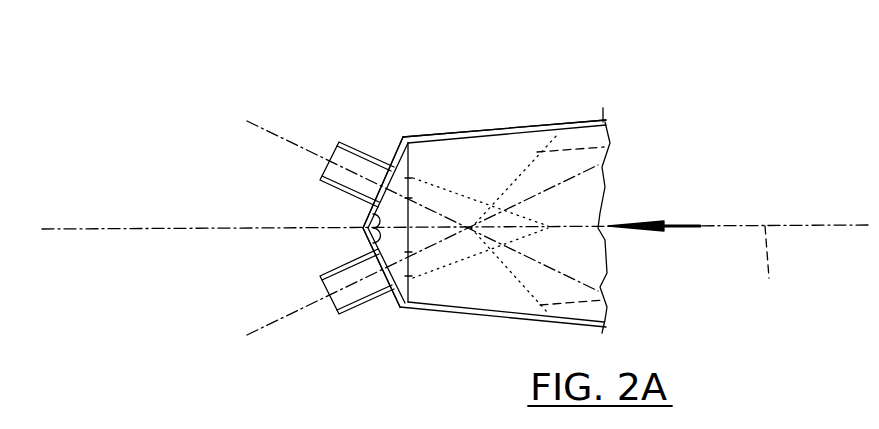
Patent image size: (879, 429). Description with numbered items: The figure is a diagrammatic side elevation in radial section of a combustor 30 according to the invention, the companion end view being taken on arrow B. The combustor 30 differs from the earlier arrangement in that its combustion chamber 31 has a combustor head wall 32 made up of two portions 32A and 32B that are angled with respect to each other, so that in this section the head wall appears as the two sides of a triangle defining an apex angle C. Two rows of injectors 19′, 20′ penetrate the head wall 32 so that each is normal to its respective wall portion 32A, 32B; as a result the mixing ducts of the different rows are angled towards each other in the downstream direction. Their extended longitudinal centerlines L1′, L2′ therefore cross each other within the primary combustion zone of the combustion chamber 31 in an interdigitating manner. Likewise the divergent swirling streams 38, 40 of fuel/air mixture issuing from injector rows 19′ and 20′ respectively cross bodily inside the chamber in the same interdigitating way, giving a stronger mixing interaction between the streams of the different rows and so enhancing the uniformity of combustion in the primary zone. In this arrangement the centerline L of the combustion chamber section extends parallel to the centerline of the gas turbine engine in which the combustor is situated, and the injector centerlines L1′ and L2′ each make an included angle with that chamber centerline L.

The combustor 30 is at (512, 87).
The combustion chamber 31 is at (563, 121).
The combustor head wall 32 is at (397, 153).
The head wall portion 32A is at (391, 155).
The head wall portion 32B is at (392, 297).
The injectors 19′ is at (331, 185).
The injectors 20′ is at (332, 311).
The extended longitudinal centerline L1′ is at (274, 135).
The extended longitudinal centerline L2′ is at (281, 313).
The apex angle C is at (368, 242).
The divergent swirling stream 40 is at (604, 147).
The divergent swirling stream 38 is at (604, 300).
The arrow B is at (657, 206).
The centerline of the combustion chamber section L is at (784, 310).